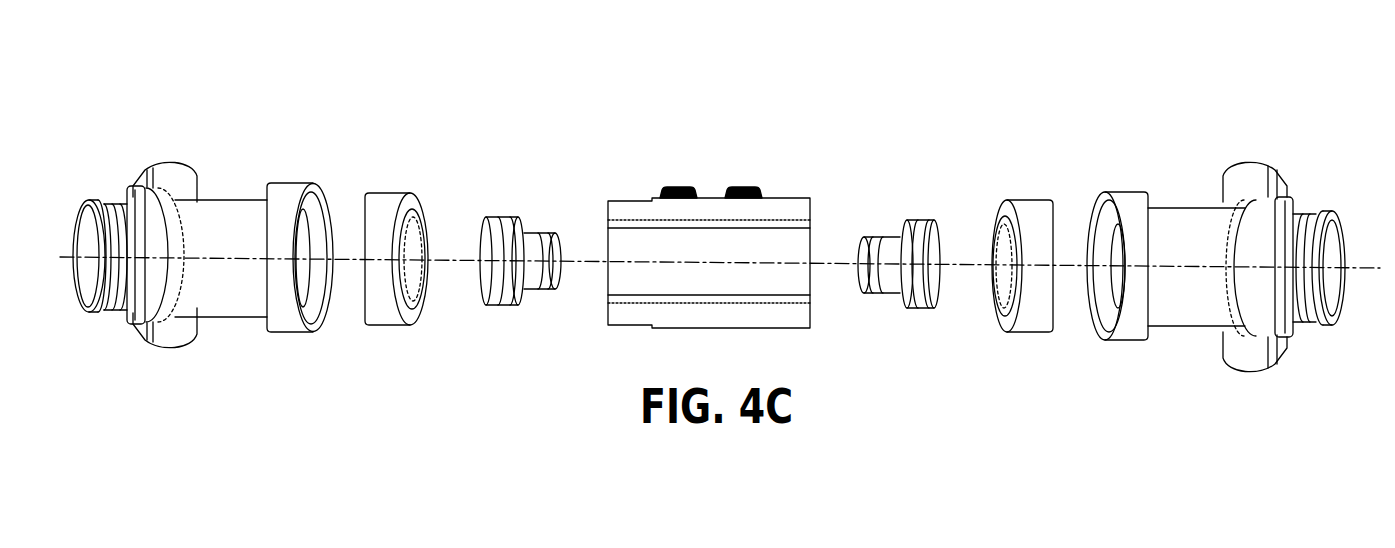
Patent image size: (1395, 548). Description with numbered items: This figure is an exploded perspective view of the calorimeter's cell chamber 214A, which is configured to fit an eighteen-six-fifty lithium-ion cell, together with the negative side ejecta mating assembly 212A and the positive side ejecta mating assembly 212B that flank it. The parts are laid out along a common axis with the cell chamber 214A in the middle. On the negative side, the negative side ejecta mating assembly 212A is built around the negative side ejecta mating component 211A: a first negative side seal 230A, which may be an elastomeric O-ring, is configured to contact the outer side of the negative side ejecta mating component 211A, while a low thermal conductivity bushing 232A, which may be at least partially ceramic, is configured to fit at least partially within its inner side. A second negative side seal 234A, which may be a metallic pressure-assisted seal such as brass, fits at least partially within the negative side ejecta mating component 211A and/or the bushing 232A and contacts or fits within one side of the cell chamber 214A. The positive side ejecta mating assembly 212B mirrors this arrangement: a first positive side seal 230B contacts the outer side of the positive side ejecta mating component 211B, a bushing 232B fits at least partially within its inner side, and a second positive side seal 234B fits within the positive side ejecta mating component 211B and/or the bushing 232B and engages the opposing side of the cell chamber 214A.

The negative side ejecta mating assembly 212A is at (558, 145).
The positive side ejecta mating assembly 212B is at (1328, 173).
The cell chamber 214A is at (708, 195).
The negative side ejecta mating component 211A is at (207, 302).
The positive side ejecta mating component 211B is at (1192, 313).
The first negative side seal 230A is at (97, 313).
The first positive side seal 230B is at (1330, 317).
The negative side bushing 232A is at (385, 307).
The positive side bushing 232B is at (1035, 312).
The second negative side seal 234A is at (507, 307).
The second positive side seal 234B is at (910, 310).